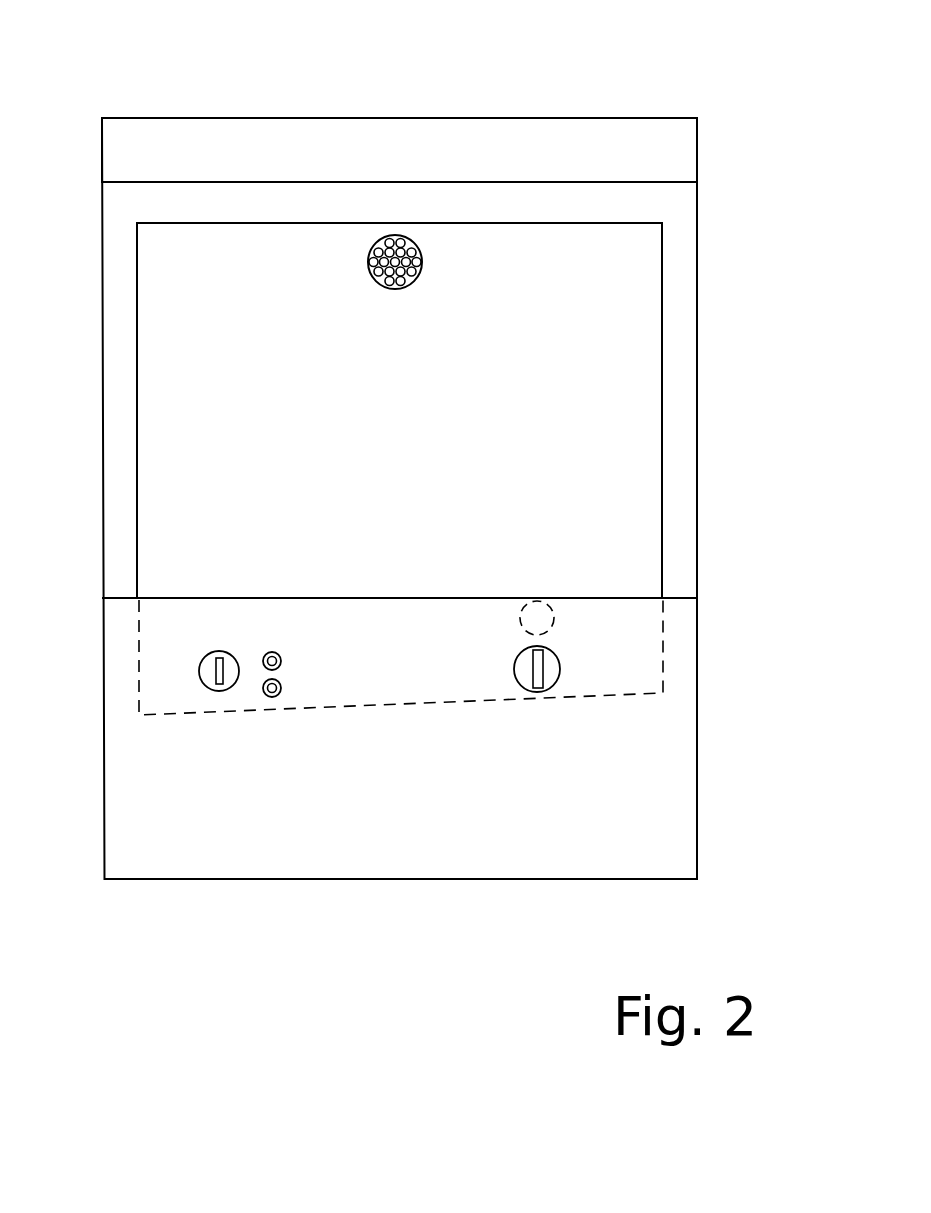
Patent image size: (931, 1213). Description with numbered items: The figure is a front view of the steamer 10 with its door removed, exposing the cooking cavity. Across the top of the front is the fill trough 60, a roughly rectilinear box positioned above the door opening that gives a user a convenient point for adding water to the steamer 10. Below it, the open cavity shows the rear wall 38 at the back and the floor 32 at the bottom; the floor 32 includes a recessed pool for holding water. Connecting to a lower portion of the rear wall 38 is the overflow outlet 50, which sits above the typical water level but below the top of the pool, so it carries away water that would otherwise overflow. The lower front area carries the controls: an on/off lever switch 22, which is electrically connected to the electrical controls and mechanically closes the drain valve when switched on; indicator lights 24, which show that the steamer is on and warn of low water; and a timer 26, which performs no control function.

The steamer 10 is at (527, 100).
The fill trough 60 is at (693, 140).
The rear wall 38 is at (410, 397).
The floor 32 is at (402, 705).
The on/off lever switch 22 is at (199, 671).
The indicator lights 24 is at (281, 660).
The timer 26 is at (560, 669).
The overflow outlet 50 is at (556, 618).